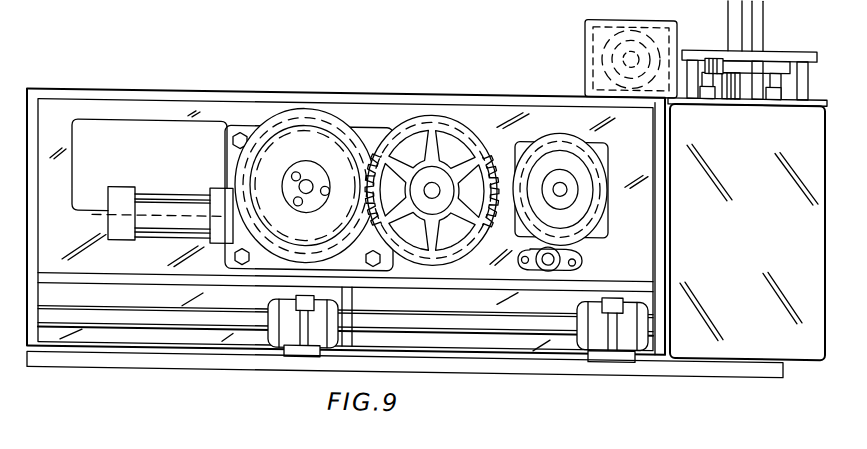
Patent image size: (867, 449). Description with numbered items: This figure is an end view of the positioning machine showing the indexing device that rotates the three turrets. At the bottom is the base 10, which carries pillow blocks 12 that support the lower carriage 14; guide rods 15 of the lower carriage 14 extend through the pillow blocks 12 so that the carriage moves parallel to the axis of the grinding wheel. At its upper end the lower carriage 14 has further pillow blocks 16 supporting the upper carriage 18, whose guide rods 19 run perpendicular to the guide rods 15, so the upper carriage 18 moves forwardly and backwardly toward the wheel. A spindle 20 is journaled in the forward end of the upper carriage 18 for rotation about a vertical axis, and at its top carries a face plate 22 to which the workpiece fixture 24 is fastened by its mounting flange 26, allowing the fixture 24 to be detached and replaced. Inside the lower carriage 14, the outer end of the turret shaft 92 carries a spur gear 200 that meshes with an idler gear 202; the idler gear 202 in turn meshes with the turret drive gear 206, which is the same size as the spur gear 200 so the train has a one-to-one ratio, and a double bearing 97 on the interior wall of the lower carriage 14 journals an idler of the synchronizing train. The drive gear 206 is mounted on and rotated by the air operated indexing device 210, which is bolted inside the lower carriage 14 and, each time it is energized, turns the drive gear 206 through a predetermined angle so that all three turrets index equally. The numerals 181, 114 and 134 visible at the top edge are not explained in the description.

The base 10 is at (162, 366).
The pillow blocks 12 is at (290, 332).
The lower carriage 14 is at (55, 122).
The guide rods 15 is at (495, 330).
The pillow blocks 16 is at (612, 50).
The upper carriage 18 is at (760, 220).
The guide rods 19 is at (618, 108).
The spindle 20 is at (748, 78).
The face plate 22 is at (720, 62).
The fixture 24 is at (758, 12).
The mounting flange 26 is at (770, 62).
The turret shaft 92 is at (566, 185).
The double bearing 97 is at (582, 260).
The spur gear 200 is at (543, 153).
The idler gear 202 is at (435, 125).
The turret drive gear 206 is at (268, 148).
The air operated indexing device 210 is at (150, 157).
The element 181 is at (198, 12).
The element 114 is at (273, 10).
The element 134 is at (330, 0).